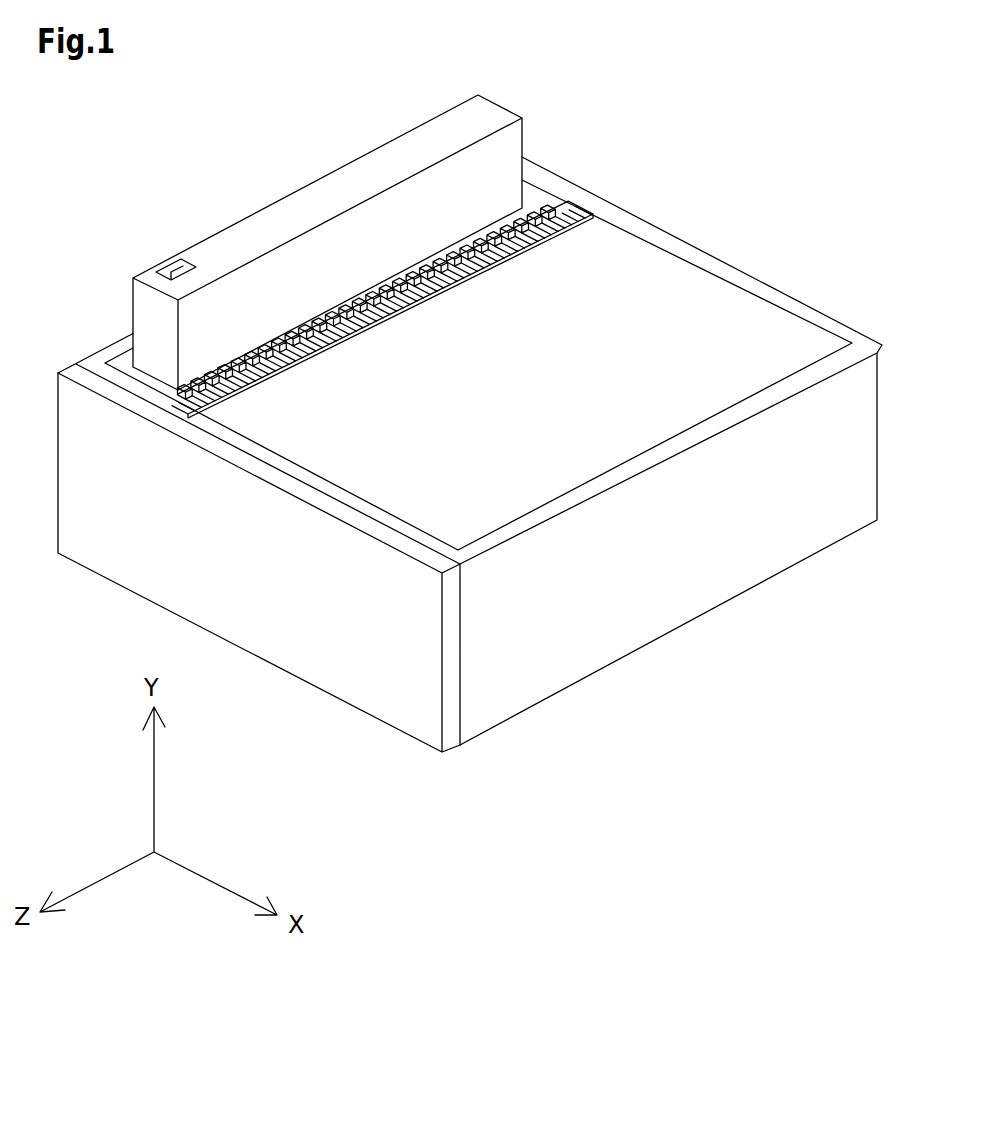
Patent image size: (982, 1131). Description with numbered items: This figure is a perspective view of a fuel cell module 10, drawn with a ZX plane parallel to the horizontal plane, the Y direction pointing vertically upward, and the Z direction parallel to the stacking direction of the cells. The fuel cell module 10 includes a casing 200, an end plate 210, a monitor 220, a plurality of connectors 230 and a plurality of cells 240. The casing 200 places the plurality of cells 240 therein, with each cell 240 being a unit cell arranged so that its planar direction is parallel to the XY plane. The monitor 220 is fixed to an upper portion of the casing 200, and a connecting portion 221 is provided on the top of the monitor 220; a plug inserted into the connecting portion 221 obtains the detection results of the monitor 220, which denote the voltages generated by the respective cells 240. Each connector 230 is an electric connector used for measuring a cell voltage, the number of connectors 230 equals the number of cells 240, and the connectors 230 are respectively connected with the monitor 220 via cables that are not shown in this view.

The fuel cell module 10 is at (835, 140).
The casing 200 is at (660, 600).
The end plate 210 is at (130, 558).
The monitor 220 is at (285, 208).
The connecting portion 221 is at (171, 262).
The connectors 230 is at (187, 401).
The cells 240 is at (579, 216).